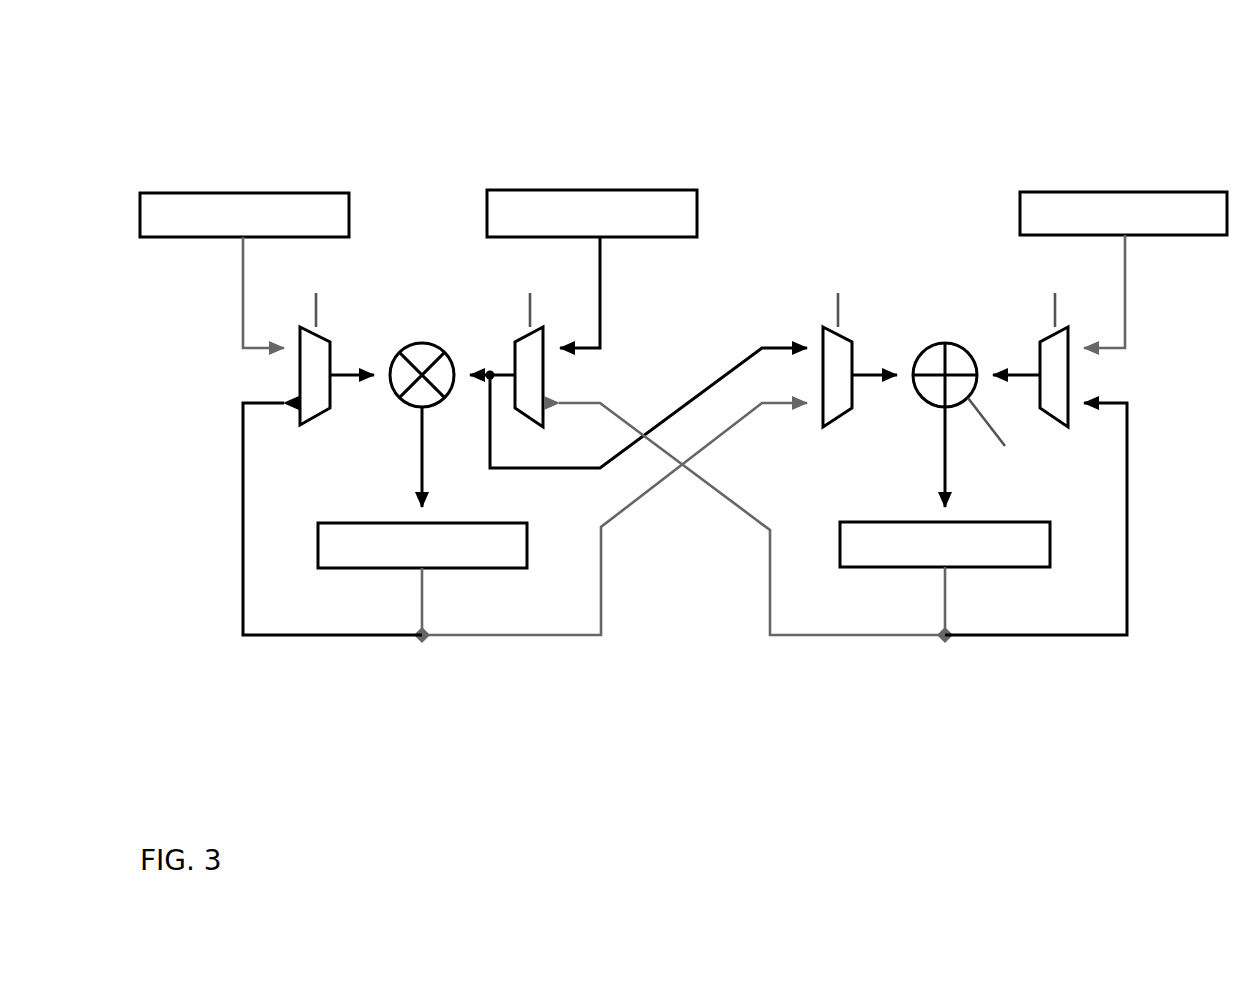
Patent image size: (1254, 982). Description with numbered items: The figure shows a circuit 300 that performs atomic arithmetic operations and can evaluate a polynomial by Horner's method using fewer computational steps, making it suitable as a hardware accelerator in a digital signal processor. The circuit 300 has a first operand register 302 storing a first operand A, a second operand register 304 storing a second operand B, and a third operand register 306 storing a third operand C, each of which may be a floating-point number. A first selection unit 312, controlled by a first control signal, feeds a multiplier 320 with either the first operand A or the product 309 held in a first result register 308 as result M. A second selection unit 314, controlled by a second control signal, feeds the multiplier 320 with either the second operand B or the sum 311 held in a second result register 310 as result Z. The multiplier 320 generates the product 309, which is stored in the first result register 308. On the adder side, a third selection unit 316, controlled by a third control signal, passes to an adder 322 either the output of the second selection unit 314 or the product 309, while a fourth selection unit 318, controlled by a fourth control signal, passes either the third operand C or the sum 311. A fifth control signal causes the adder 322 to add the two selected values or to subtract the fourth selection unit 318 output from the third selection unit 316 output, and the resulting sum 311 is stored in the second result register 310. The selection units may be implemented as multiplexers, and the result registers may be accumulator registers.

The circuit 300 is at (1060, 59).
The first operand register 302 is at (254, 193).
The second operand register 304 is at (642, 190).
The third operand register 306 is at (1170, 192).
The first result register 308 is at (350, 523).
The product 309 is at (425, 438).
The second result register 310 is at (875, 522).
The sum 311 is at (948, 450).
The first selection unit 312 is at (332, 348).
The second selection unit 314 is at (520, 352).
The third selection unit 316 is at (854, 370).
The fourth selection unit 318 is at (1040, 354).
The multiplier 320 is at (422, 343).
The adder 322 is at (945, 343).